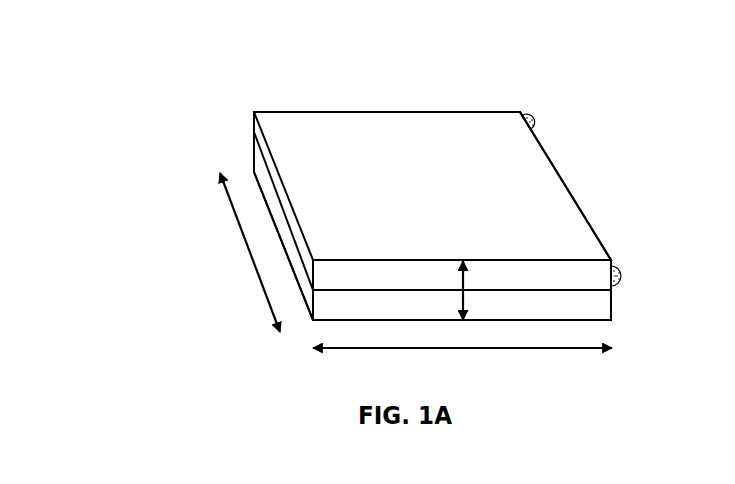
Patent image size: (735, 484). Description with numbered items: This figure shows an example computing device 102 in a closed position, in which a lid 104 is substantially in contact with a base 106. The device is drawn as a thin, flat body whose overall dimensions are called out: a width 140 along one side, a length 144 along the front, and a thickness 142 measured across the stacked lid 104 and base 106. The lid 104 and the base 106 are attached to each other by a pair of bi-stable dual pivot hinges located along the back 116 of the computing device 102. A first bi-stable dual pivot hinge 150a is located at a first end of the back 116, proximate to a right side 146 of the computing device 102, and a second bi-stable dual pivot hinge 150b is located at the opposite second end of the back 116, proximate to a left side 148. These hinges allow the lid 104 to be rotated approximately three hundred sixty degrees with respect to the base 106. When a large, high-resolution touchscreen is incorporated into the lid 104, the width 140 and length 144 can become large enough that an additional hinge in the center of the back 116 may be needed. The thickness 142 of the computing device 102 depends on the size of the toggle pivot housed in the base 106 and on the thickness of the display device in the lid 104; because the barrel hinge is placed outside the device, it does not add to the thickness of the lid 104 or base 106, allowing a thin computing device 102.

The computing device 102 is at (152, 85).
The lid 104 is at (256, 135).
The base 106 is at (257, 163).
The back 116 is at (571, 176).
The width 140 is at (247, 243).
The thickness 142 is at (465, 280).
The length 144 is at (505, 348).
The right side 146 is at (623, 321).
The left side 148 is at (526, 102).
The first bi-stable dual pivot hinge 150a is at (633, 277).
The second bi-stable dual pivot hinge 150b is at (542, 108).